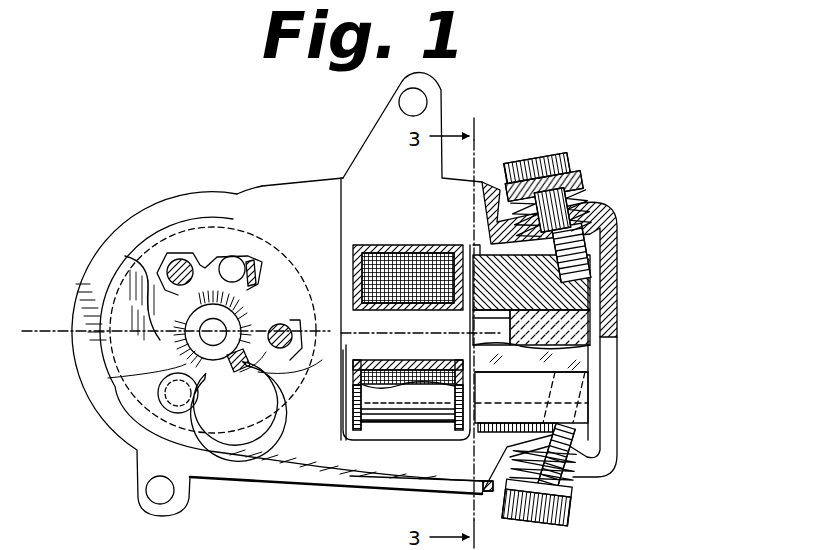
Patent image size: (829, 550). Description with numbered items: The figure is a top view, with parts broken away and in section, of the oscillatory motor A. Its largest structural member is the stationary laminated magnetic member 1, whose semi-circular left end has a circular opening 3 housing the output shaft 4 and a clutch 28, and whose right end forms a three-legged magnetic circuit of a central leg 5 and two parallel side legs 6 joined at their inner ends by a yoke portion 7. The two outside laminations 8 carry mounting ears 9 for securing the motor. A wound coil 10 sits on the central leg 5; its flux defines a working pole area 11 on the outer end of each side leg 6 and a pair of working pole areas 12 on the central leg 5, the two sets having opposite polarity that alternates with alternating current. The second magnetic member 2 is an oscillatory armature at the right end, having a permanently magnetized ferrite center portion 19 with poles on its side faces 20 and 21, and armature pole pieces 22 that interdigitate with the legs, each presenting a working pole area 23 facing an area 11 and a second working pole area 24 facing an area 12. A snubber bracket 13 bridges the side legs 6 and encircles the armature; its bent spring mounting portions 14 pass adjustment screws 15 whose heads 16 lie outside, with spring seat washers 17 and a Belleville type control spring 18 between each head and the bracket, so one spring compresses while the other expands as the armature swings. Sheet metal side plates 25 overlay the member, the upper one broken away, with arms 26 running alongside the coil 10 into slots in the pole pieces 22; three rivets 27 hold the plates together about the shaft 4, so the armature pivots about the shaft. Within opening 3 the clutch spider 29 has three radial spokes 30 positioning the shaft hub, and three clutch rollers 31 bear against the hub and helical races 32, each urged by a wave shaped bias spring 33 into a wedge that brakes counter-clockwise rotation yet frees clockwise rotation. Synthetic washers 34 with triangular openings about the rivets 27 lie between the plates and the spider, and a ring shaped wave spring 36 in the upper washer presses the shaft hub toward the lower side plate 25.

The oscillatory motor A is at (125, 195).
The stationary laminated magnetic member 1 is at (250, 188).
The second magnetic member (oscillatory armature) 2 is at (588, 252).
The circular opening 3 is at (196, 216).
The output shaft 4 is at (268, 308).
The central leg 5 is at (304, 376).
The side legs 6 is at (452, 192).
The yoke portion 7 is at (342, 178).
The outside laminations 8 is at (92, 398).
The mounting ears 9 is at (440, 96).
The wound coil 10 is at (392, 404).
The working pole area of side leg 11 is at (470, 248).
The working pole areas of central leg 12 is at (462, 312).
The snubber bracket 13 is at (619, 419).
The spring mounting portion 14 is at (604, 220).
The adjustment screw 15 is at (524, 168).
The screw head 16 is at (565, 152).
The spring seat washers 17 is at (566, 178).
The Belleville type control spring 18 is at (580, 200).
The permanently magnetized center portion (ferrite block) 19 is at (592, 356).
The side face 20 is at (592, 262).
The other side face 21 is at (548, 376).
The armature pole pieces 22 is at (602, 282).
The working pole area 23 is at (482, 230).
The second working pole area 24 is at (503, 345).
The side plates 25 is at (300, 478).
The arms 26 is at (446, 470).
The rivets 27 is at (172, 392).
The clutch 28 is at (222, 222).
The spider 29 is at (260, 210).
The radial spokes 30 is at (132, 296).
The clutch rollers 31 is at (244, 262).
The helical races 32 is at (250, 266).
The wave shaped bias spring 33 is at (258, 280).
The washers 34 is at (112, 298).
The ring shaped wave spring 36 is at (232, 318).